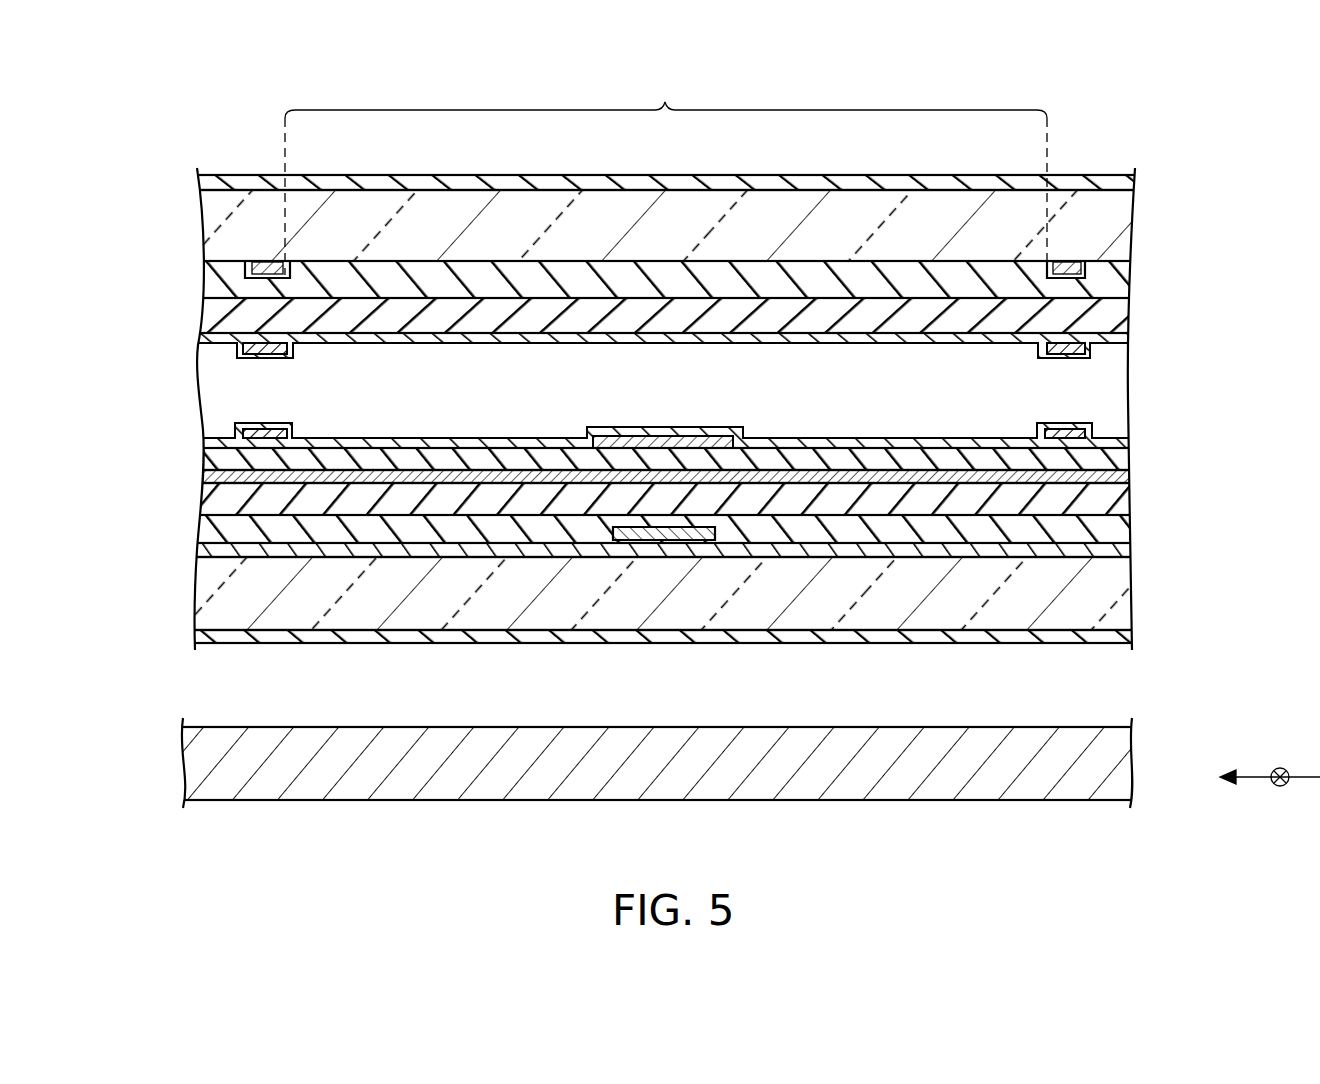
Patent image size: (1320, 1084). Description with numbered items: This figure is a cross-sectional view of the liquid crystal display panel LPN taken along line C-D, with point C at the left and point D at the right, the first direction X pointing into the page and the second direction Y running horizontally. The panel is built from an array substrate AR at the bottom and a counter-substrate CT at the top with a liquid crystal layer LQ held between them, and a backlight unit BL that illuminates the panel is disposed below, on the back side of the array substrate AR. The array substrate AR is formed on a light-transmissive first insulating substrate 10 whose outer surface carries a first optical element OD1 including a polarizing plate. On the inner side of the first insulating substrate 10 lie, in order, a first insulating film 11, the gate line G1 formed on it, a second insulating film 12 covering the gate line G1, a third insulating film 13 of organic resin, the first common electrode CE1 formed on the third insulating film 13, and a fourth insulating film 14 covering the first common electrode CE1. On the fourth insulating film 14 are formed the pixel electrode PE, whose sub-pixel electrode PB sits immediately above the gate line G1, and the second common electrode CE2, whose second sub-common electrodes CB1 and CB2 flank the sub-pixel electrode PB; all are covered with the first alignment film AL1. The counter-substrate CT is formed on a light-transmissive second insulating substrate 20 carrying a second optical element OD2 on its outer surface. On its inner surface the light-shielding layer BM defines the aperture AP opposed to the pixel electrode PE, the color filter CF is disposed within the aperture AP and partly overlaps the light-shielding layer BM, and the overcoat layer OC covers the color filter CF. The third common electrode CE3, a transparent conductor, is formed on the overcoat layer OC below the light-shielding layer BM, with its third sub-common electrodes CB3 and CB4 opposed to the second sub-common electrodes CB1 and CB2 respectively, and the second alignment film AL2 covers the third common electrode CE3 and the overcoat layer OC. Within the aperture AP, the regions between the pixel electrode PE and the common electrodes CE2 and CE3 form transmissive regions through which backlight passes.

In FIG. 5, the liquid crystal display panel LPN is at (1146, 159).
In FIG. 5, the counter-substrate CT is at (188, 231).
In FIG. 5, the array substrate AR is at (188, 589).
In FIG. 5, the liquid crystal layer LQ is at (1112, 404).
In FIG. 5, the aperture AP is at (666, 173).
In FIG. 5, the second optical element OD2 is at (1133, 183).
In FIG. 5, the second insulating substrate 20 is at (1118, 216).
In FIG. 5, the light-shielding layer BM is at (262, 273).
In FIG. 5, the color filter CF is at (1118, 296).
In FIG. 5, the overcoat layer OC is at (1118, 318).
In FIG. 5, the second alignment film AL2 is at (1112, 344).
In FIG. 5, the third sub-common electrode CB3 is at (258, 357).
In FIG. 5, the third sub-common electrode CB4 is at (1080, 359).
In FIG. 5, the third common electrode CE3 is at (664, 348).
In FIG. 5, the second sub-common electrode CB1 is at (262, 428).
In FIG. 5, the second sub-common electrode CB2 is at (1061, 430).
In FIG. 5, the second common electrode CE2 is at (664, 433).
In FIG. 5, the sub-pixel electrode PB is at (646, 434).
In FIG. 5, the pixel electrode PE is at (663, 442).
In FIG. 5, the first alignment film AL1 is at (1112, 443).
In FIG. 5, the fourth insulating film 14 is at (1118, 462).
In FIG. 5, the first common electrode CE1 is at (1040, 485).
In FIG. 5, the third insulating film 13 is at (1122, 496).
In FIG. 5, the second insulating film 12 is at (1120, 530).
In FIG. 5, the gate line G1 is at (669, 541).
In FIG. 5, the first insulating film 11 is at (1120, 555).
In FIG. 5, the first insulating substrate 10 is at (1110, 590).
In FIG. 5, the first optical element OD1 is at (1128, 635).
The backlight unit BL is at (1128, 771).
In FIG. 5, the line C-D end point C is at (198, 675).
In FIG. 5, the line C-D end point D is at (1127, 675).
The first direction X is at (1279, 796).
The second direction Y is at (1259, 779).